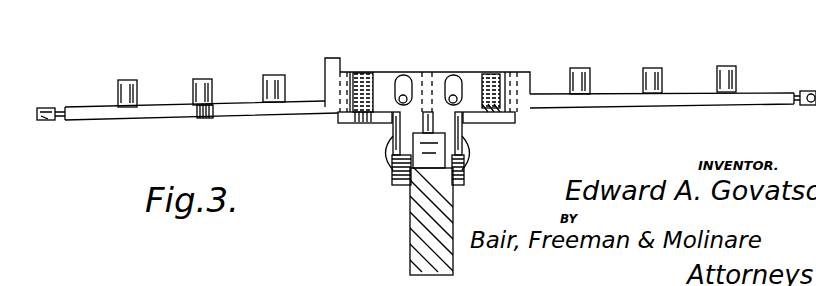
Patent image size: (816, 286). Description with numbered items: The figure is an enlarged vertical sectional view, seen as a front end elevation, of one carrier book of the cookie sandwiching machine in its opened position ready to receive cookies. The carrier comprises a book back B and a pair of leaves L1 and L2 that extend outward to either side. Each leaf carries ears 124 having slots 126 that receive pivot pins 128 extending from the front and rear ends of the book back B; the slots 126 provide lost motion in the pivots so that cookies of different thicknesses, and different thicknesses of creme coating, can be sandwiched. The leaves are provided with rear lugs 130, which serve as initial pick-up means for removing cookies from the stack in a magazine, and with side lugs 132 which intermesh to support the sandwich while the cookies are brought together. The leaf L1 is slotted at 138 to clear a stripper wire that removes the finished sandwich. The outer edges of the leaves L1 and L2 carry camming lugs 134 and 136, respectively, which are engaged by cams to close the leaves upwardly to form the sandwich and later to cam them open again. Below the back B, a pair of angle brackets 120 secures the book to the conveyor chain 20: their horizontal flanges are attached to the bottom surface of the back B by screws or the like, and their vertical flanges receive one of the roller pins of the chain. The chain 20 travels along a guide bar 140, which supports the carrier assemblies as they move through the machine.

The chain 20 is at (408, 172).
The book back B is at (420, 110).
The leaf L1 is at (237, 104).
The leaf L2 is at (642, 102).
The angle brackets 120 is at (372, 123).
The ears 124 is at (385, 92).
The slots 126 is at (452, 77).
The pivot pins 128 is at (399, 74).
The rear lugs 130 is at (202, 79).
The side lugs 132 is at (330, 58).
The camming lug 134 is at (46, 121).
The camming lug 136 is at (814, 108).
The slot 138 is at (206, 118).
The guide bar 140 is at (443, 210).